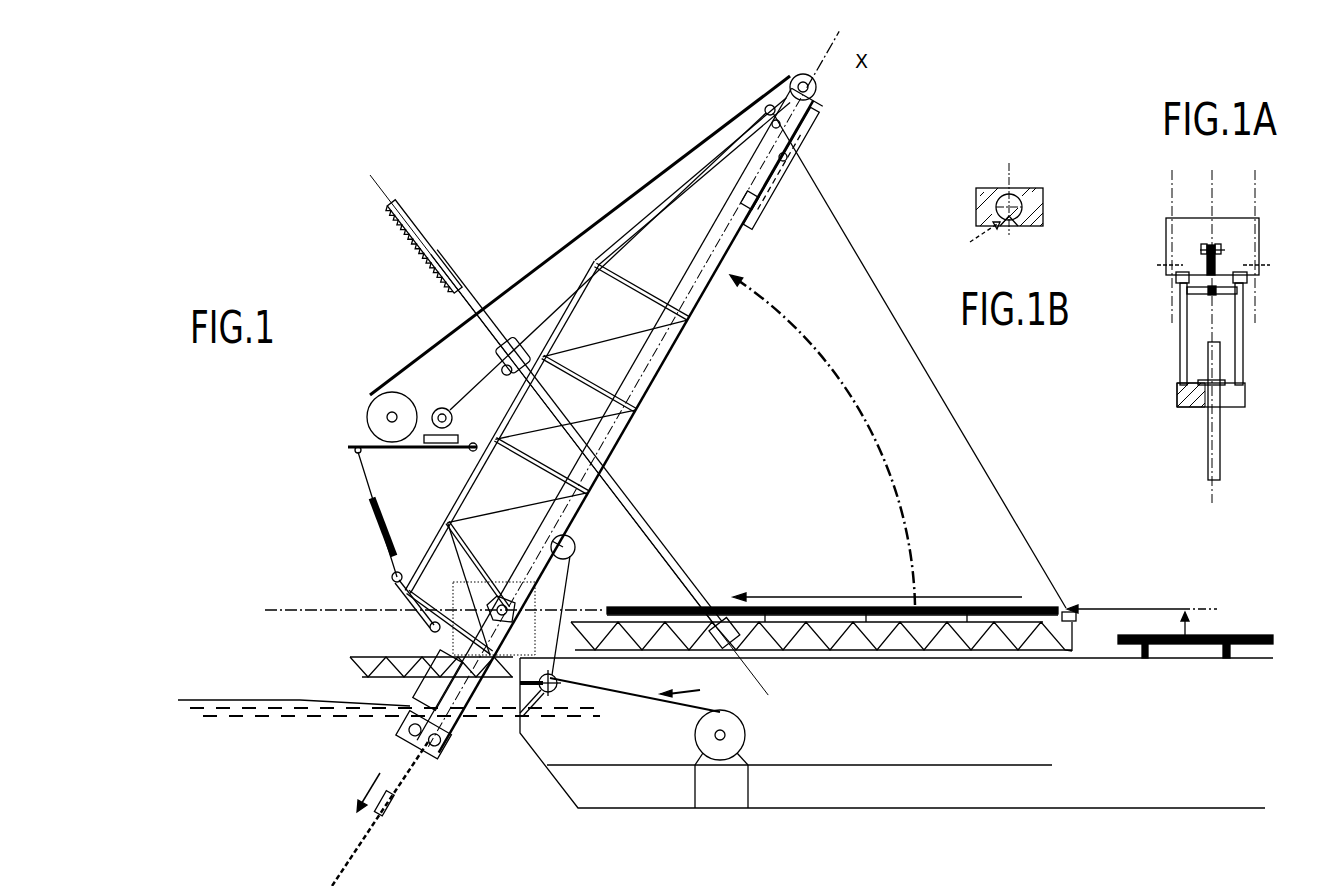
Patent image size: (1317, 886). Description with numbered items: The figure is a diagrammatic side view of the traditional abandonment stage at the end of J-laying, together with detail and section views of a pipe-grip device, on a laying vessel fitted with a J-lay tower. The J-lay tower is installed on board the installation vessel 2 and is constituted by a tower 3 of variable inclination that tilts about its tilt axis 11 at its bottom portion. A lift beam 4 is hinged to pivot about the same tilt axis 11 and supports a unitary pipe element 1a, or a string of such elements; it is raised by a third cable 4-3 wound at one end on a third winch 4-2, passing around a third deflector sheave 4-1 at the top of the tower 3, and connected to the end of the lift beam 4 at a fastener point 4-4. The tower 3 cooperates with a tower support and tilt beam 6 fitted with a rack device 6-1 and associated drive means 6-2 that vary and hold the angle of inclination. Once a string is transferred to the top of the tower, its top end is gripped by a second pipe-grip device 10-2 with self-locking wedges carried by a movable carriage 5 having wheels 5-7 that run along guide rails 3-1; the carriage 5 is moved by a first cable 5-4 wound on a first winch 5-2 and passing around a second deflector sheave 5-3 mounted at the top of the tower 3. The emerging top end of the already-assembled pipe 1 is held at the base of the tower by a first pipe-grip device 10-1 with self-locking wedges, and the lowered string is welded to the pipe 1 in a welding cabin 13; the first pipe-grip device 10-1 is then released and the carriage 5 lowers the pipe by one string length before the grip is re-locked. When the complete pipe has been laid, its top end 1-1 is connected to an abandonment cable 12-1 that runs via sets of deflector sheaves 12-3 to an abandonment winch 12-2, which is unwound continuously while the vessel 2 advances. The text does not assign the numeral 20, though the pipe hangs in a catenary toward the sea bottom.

In FIG. 1, the pipe 1 is at (356, 854).
In FIG. 1A, the pipe 1 is at (1220, 440).
In FIG. 1B, the pipe 1 is at (1012, 200).
In FIG. 1, the top end of the pipe 1-1 is at (394, 797).
In FIG. 1, the unitary pipe element 1a is at (977, 605).
In FIG. 1, the installation vessel 2 is at (933, 764).
In FIG. 1, the tower 3 is at (702, 342).
In FIG. 1, the guide rails 3-1 is at (703, 262).
In FIG. 1, the lift beam 4 is at (1050, 645).
In FIG. 1, the third deflector sheave 4-1 is at (766, 106).
In FIG. 1, the third winch 4-2 is at (439, 407).
In FIG. 1, the third cable 4-3 is at (885, 272).
In FIG. 1, the fastener point 4-4 is at (1076, 612).
In FIG. 1, the movable carriage 5 is at (779, 172).
In FIG. 1A, the movable carriage 5 is at (1235, 235).
In FIG. 1, the first winch 5-2 is at (372, 412).
In FIG. 1, the second deflector sheave 5-3 is at (818, 88).
In FIG. 1, the first cable 5-4 is at (645, 193).
In FIG. 1, the wheels 5-7 is at (772, 145).
In FIG. 1, the tower support and tilt beam 6 is at (478, 291).
In FIG. 1, the rack device 6-1 is at (414, 240).
In FIG. 1, the drive means 6-2 is at (496, 380).
In FIG. 1, the first pipe-grip device 10-1 is at (408, 716).
In FIG. 1, the second pipe-grip device 10-2 is at (752, 205).
In FIG. 1A, the second pipe-grip device 10-2 is at (1177, 395).
In FIG. 1B, the second pipe-grip device 10-2 is at (984, 188).
In FIG. 1, the tilt axis 11 is at (497, 600).
In FIG. 1, the abandonment cable 12-1 is at (578, 690).
In FIG. 1, the abandonment winch 12-2 is at (743, 730).
In FIG. 1, the deflector sheaves 12-3 is at (565, 660).
In FIG. 1, the welding cabin 13 is at (506, 585).
In FIG. 1, the water surface 20 is at (248, 698).